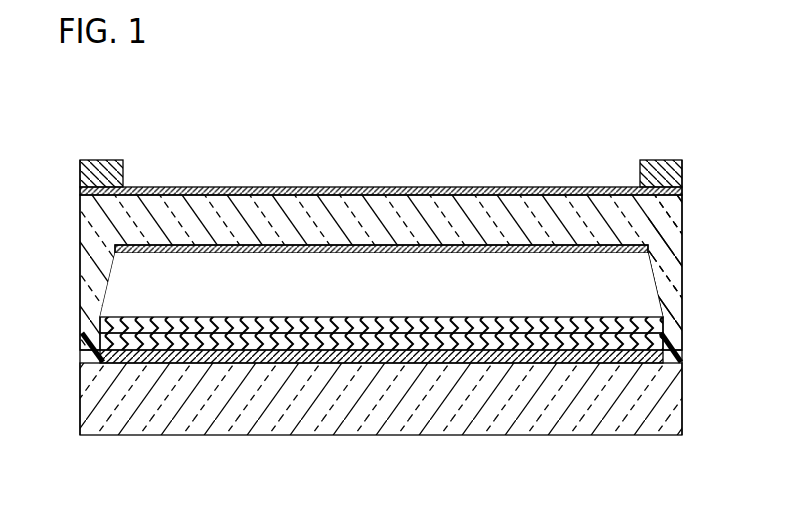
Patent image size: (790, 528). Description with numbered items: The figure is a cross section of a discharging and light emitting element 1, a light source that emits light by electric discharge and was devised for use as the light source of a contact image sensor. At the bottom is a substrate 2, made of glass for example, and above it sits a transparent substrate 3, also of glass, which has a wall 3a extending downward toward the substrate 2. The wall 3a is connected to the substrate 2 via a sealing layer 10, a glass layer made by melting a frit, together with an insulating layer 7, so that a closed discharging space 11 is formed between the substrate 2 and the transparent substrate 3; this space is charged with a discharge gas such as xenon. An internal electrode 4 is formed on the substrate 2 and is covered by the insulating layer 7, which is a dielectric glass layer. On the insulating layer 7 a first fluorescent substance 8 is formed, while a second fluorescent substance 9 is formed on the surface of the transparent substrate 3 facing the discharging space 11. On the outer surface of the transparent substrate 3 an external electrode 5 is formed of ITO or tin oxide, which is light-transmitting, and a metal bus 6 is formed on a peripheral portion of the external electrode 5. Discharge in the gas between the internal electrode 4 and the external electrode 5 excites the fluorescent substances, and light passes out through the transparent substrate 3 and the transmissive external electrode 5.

The discharging and light emitting element 1 is at (127, 143).
The substrate 2 is at (110, 403).
The transparent substrate 3 is at (103, 221).
The wall 3a is at (670, 262).
The internal electrode 4 is at (178, 355).
The external electrode 5 is at (682, 197).
The metal bus 6 is at (80, 173).
The insulating layer 7 is at (100, 352).
The first fluorescent substance 8 is at (100, 316).
The second fluorescent substance 9 is at (100, 247).
The sealing layer 10 is at (97, 326).
The discharging space 11 is at (643, 290).